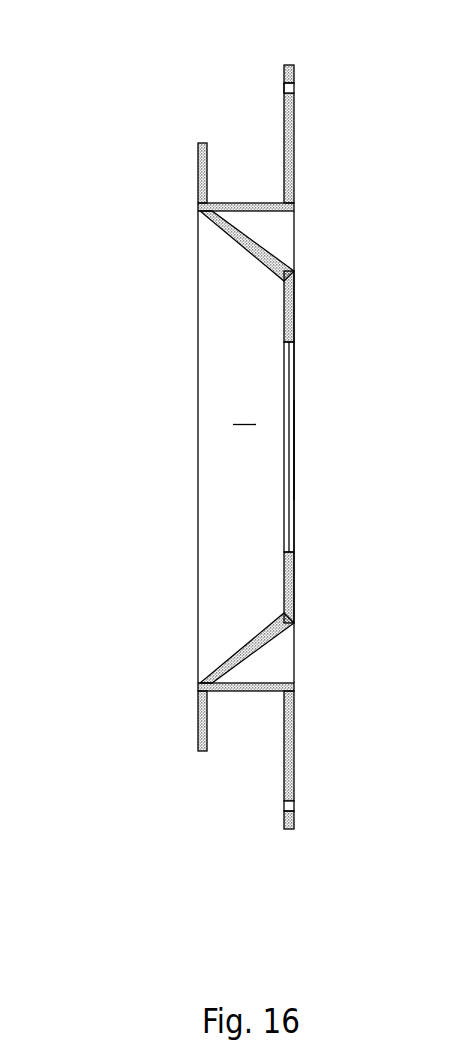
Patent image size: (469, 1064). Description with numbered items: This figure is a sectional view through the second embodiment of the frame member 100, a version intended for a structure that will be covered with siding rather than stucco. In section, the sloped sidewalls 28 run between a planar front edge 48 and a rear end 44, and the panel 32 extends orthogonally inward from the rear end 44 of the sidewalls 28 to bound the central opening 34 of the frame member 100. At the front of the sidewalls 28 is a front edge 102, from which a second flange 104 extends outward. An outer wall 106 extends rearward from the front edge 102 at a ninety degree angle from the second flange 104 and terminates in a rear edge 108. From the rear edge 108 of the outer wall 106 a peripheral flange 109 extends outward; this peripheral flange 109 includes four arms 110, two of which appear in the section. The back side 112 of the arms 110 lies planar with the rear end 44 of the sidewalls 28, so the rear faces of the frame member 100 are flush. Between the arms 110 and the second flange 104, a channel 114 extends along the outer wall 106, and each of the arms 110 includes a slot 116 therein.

The frame member 100 is at (98, 216).
The front edge 102 is at (197, 205).
The second flange 104 is at (197, 175).
The outer wall 106 is at (252, 213).
The rear edge 108 is at (294, 204).
The peripheral flange 109 is at (287, 64).
The arms 110 is at (295, 88).
The back side 112 is at (306, 135).
The channel 114 is at (246, 160).
The slot 116 is at (282, 84).
The sidewalls 28 is at (243, 250).
The panel 32 is at (293, 580).
The central opening 34 is at (288, 377).
The rear end 44 is at (295, 450).
The front edge 48 is at (198, 446).